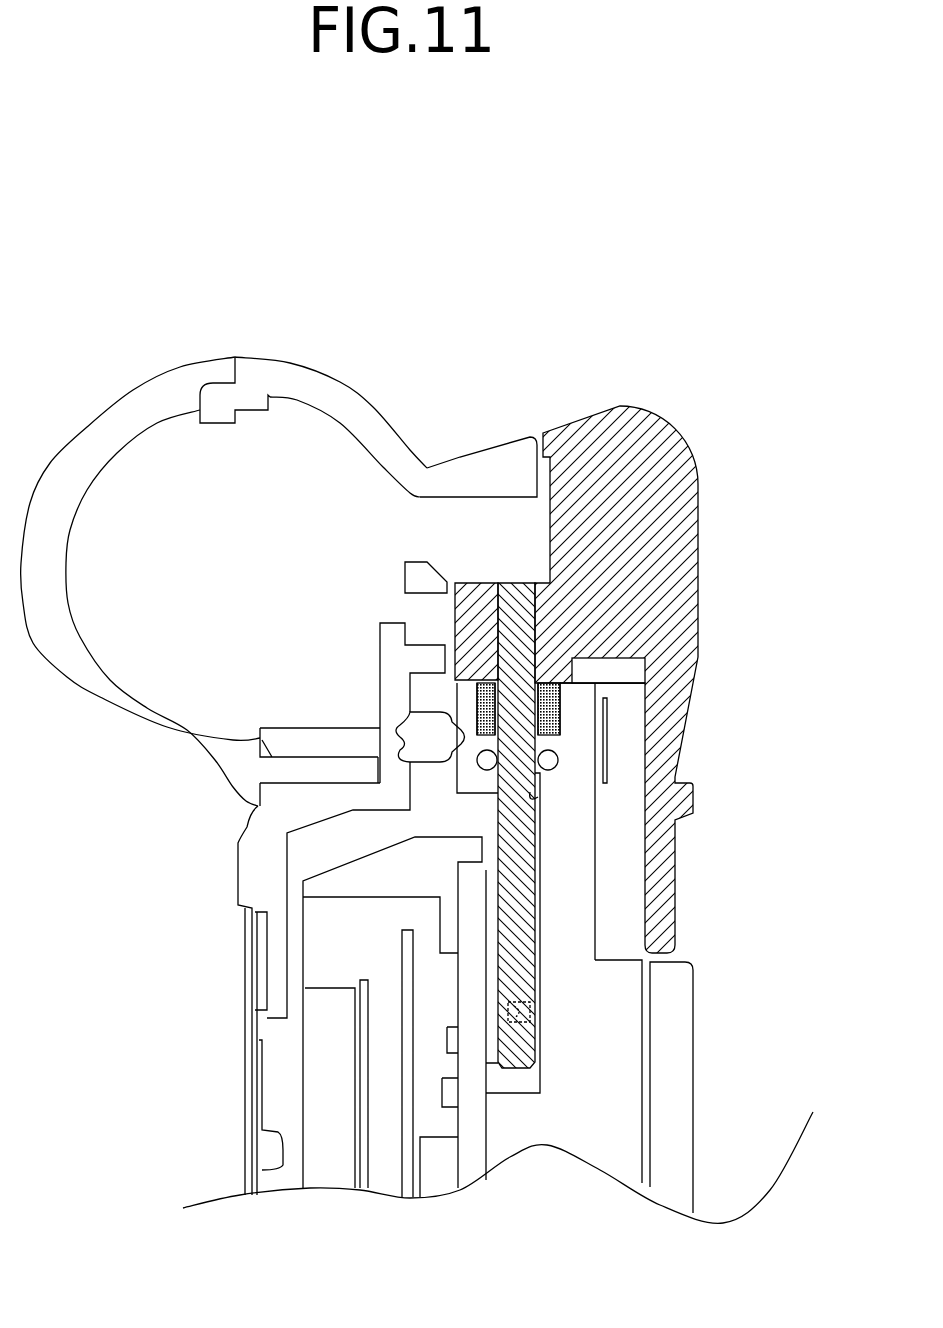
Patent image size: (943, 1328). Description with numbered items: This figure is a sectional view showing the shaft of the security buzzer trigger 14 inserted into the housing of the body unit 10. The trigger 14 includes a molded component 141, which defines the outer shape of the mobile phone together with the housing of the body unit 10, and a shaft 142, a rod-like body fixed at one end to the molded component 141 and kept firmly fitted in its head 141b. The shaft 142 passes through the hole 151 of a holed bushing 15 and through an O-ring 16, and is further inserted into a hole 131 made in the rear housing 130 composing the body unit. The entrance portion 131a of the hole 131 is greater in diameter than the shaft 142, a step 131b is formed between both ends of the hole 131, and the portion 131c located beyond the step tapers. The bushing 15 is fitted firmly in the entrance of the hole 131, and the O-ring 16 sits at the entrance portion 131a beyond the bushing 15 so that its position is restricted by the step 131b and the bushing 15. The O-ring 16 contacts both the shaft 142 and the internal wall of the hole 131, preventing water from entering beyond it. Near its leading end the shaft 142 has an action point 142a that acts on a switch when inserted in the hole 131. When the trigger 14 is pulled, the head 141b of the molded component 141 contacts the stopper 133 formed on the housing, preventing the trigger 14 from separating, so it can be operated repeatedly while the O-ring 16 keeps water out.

The body unit 10 is at (250, 318).
The security buzzer trigger 14 is at (584, 732).
The bushing 15 is at (645, 683).
The O-ring 16 is at (558, 760).
The rear housing 130 is at (707, 997).
The hole 131 is at (668, 821).
The entrance portion 131a is at (560, 708).
The step 131b is at (556, 768).
The tapering portion 131c is at (542, 805).
The stopper 133 is at (497, 497).
The molded component 141 is at (584, 679).
The head 141b is at (482, 583).
The shaft 142 is at (614, 881).
The action point 142a is at (532, 1008).
The hole of bushing 151 is at (498, 682).